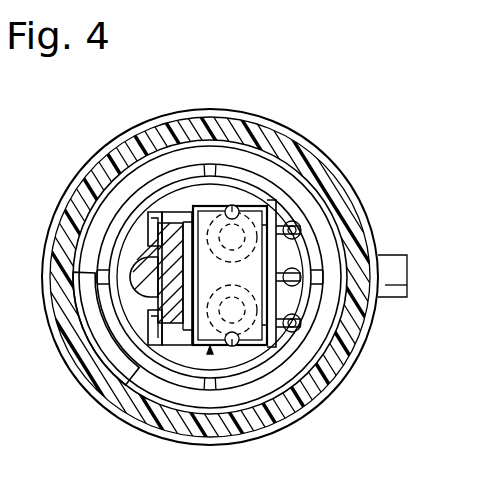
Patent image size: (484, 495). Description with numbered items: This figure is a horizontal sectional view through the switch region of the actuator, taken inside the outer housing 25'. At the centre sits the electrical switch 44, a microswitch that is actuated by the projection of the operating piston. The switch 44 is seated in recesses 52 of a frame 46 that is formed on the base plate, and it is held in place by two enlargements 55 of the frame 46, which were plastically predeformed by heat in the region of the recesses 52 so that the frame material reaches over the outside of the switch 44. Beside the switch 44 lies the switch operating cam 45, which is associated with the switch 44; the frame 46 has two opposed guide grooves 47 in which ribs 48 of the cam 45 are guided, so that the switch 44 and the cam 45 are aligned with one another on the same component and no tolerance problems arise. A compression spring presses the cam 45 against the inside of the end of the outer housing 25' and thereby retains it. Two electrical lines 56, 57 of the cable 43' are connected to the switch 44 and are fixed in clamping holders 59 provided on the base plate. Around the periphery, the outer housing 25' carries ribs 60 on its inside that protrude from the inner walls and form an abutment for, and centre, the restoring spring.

The outer housing 25' is at (230, 262).
The electrical switch 44 is at (316, 138).
The recesses 52 is at (172, 160).
The enlargements 55 is at (230, 205).
The electrical line 56 is at (268, 328).
The electrical line 57 is at (305, 232).
The clamping holders 59 is at (302, 265).
The cable 43' is at (401, 242).
The guide grooves 47 is at (203, 230).
The ribs 48 is at (148, 208).
The switch operating cam 45 is at (157, 230).
The frame 46 is at (210, 350).
The ribs 60 is at (141, 387).